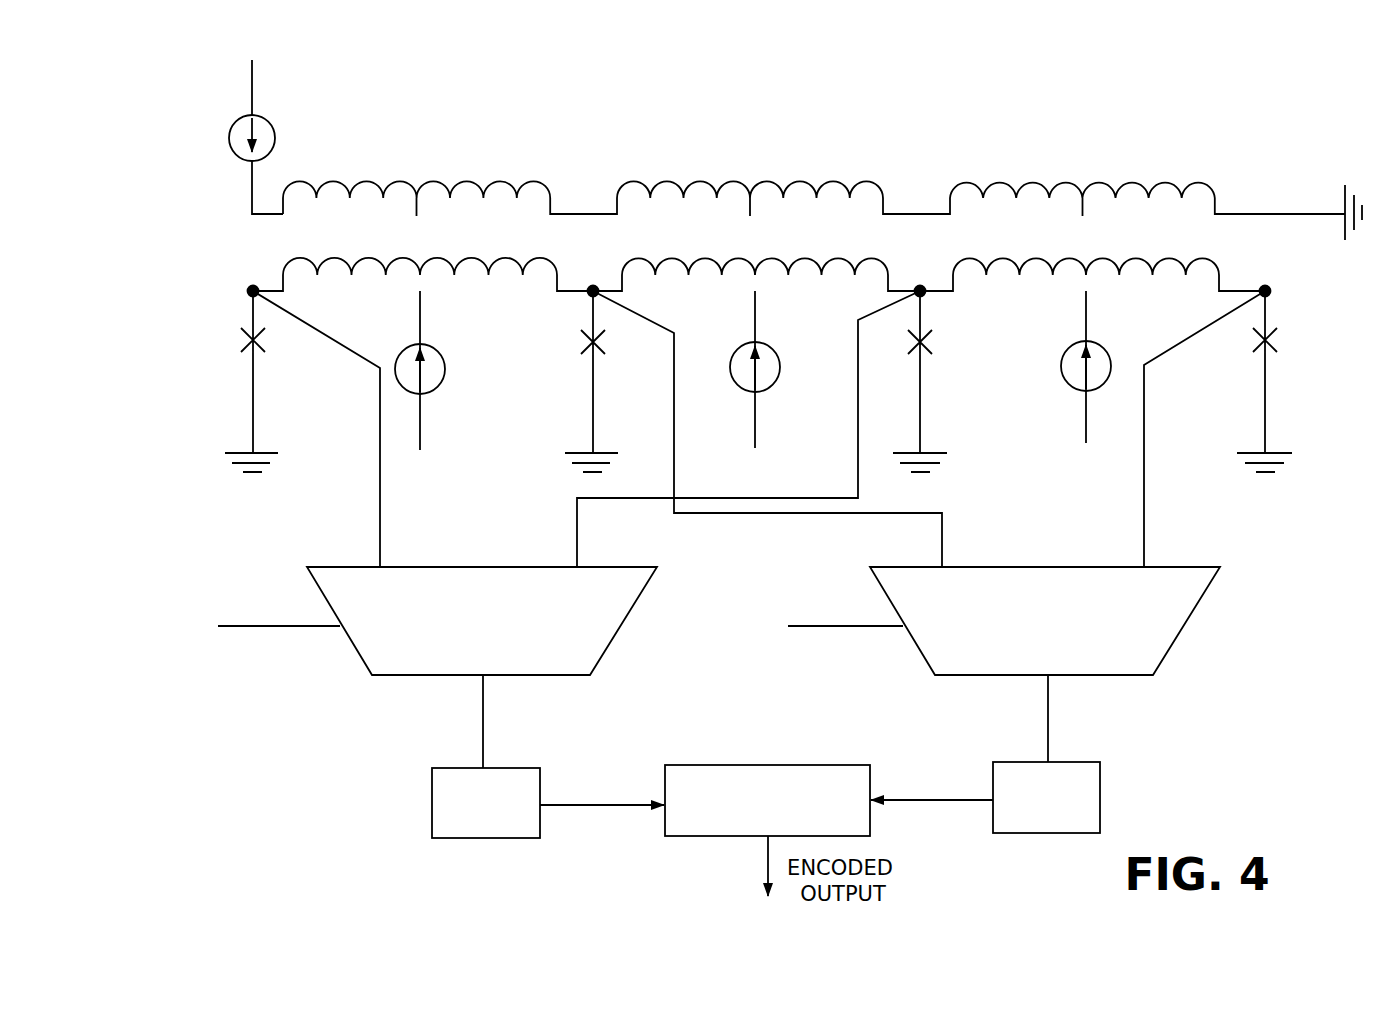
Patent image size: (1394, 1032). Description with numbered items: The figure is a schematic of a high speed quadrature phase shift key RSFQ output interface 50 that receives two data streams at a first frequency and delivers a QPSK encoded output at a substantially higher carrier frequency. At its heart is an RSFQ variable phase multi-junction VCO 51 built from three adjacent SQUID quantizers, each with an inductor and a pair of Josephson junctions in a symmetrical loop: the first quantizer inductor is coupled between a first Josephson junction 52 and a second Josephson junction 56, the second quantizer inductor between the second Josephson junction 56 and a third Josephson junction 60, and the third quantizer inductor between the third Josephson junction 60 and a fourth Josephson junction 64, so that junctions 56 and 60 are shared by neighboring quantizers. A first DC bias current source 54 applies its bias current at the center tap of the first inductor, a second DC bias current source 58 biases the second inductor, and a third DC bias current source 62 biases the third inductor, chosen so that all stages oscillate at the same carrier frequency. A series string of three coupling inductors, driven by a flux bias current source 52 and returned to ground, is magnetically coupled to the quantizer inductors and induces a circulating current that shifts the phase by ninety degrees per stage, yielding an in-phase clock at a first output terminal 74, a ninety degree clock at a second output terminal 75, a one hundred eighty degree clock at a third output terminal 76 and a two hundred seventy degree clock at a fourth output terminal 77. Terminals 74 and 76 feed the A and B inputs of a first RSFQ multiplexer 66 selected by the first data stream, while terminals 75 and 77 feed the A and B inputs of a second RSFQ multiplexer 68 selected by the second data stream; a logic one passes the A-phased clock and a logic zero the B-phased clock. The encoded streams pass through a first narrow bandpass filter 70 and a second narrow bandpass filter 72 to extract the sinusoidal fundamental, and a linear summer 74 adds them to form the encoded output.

The QPSK RSFQ output interface 50 is at (1242, 107).
The RSFQ variable phase multi-junction VCO 51 is at (950, 126).
The flux bias current source / first Josephson junction 52 is at (300, 107).
The first DC bias current source 54 is at (446, 413).
The second Josephson junction 56 is at (569, 344).
The second DC bias current source 58 is at (764, 411).
The third Josephson junction 60 is at (944, 379).
The third DC bias current source 62 is at (1056, 339).
The fourth Josephson junction 64 is at (1291, 321).
The first RSFQ multiplexer 66 is at (493, 566).
The second RSFQ multiplexer 68 is at (1040, 566).
The first narrow bandpass filter 70 is at (517, 767).
The second narrow bandpass filter 72 is at (1075, 761).
The first output terminal / linear summer 74 is at (250, 280).
The second output terminal 75 is at (590, 277).
The third output terminal 76 is at (918, 277).
The fourth output terminal 77 is at (1269, 271).